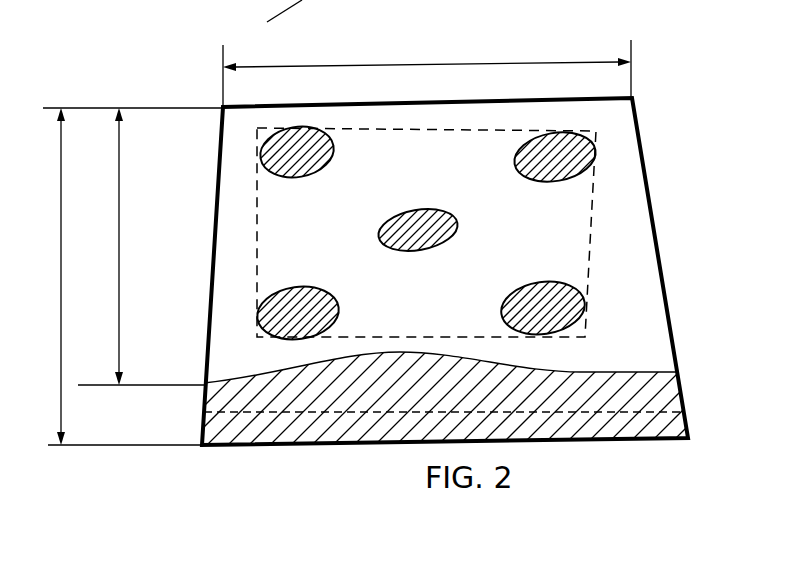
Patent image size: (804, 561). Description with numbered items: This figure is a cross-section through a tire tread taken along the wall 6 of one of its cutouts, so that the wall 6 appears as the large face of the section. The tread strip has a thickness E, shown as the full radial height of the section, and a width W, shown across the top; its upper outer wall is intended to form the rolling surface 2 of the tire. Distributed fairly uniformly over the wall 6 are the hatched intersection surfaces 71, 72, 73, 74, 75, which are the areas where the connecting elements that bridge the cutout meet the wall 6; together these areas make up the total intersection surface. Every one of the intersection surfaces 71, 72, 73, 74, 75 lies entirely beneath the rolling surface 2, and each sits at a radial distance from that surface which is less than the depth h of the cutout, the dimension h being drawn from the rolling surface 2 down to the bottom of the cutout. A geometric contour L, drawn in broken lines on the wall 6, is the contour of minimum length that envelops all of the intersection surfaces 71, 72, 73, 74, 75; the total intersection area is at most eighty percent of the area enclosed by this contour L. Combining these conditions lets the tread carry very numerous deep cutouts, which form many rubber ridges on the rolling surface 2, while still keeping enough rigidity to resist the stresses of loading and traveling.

The rolling surface 2 is at (577, 97).
The wall 6 is at (425, 312).
The intersection surface 71 is at (275, 153).
The intersection surface 72 is at (410, 222).
The intersection surface 73 is at (597, 160).
The intersection surface 74 is at (558, 310).
The intersection surface 75 is at (277, 313).
The width W is at (427, 69).
The thickness E is at (133, 276).
The depth of the cutout h is at (141, 246).
The geometric contour L is at (588, 268).